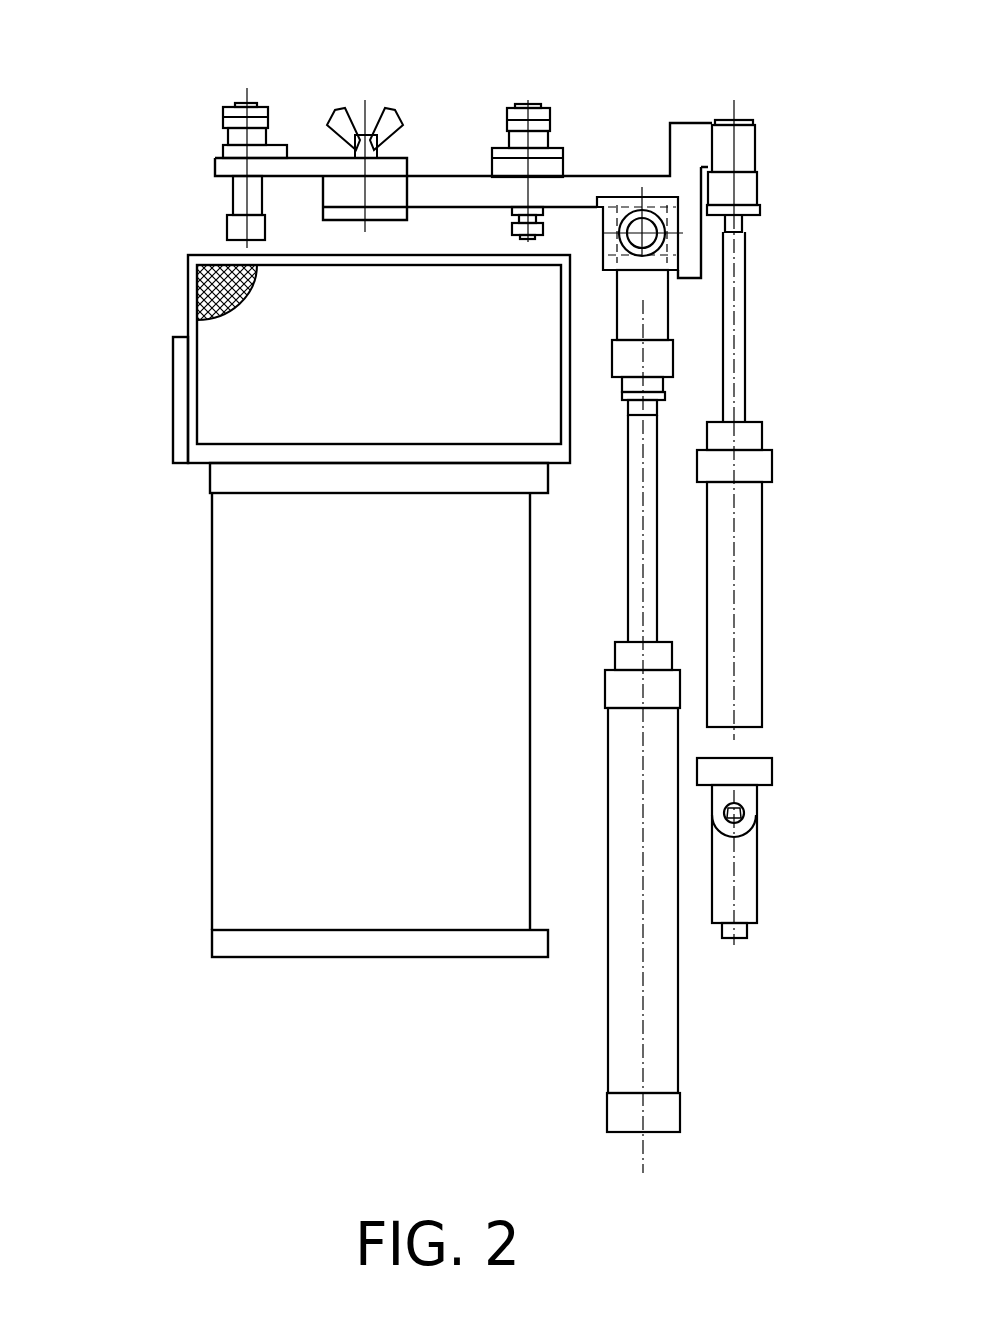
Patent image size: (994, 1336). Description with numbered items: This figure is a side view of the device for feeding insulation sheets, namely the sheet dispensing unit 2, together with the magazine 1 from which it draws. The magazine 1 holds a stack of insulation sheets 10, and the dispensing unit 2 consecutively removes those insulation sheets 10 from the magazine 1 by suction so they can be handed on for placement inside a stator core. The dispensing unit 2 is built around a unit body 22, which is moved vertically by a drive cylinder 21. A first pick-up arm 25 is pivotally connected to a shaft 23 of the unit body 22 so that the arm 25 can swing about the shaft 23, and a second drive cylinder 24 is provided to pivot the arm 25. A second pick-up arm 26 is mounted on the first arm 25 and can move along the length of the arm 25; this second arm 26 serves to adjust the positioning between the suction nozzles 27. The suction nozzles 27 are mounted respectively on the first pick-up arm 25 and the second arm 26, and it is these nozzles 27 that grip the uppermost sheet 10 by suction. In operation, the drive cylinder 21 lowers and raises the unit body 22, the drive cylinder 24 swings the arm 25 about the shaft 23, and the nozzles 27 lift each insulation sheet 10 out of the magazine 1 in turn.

The magazine 1 is at (182, 302).
The insulation sheets 10 is at (197, 282).
The sheet dispensing unit 2 is at (750, 120).
The drive cylinder 21 is at (667, 877).
The unit body 22 is at (667, 272).
The shaft 23 is at (664, 243).
The drive cylinder 24 is at (758, 578).
The first pick-up arm 25 is at (598, 178).
The second pick-up arm 26 is at (215, 163).
The suction nozzles 27 is at (503, 117).